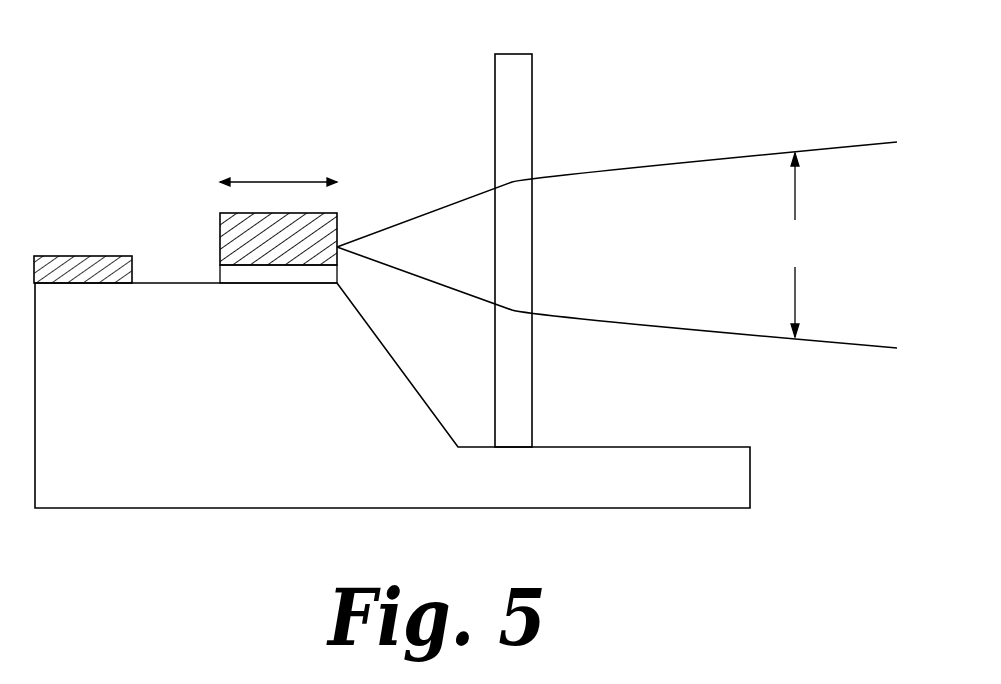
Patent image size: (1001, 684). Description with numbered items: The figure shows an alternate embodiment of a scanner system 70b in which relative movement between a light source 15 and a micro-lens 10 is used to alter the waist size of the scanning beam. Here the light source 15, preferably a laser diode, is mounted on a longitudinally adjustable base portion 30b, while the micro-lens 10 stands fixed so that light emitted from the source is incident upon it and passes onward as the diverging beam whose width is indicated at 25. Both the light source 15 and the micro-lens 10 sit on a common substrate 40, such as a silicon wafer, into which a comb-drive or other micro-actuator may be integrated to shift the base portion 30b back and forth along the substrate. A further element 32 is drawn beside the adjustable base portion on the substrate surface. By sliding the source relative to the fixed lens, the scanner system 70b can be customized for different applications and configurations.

The micro-lens 10 is at (512, 90).
The light source 15 is at (225, 229).
The width W of the deposition beam 25 is at (780, 245).
The longitudinally adjustable base portion 30b is at (250, 272).
The deposited film 32 is at (77, 255).
The common substrate 40 is at (689, 467).
The scanner system 70b is at (656, 80).